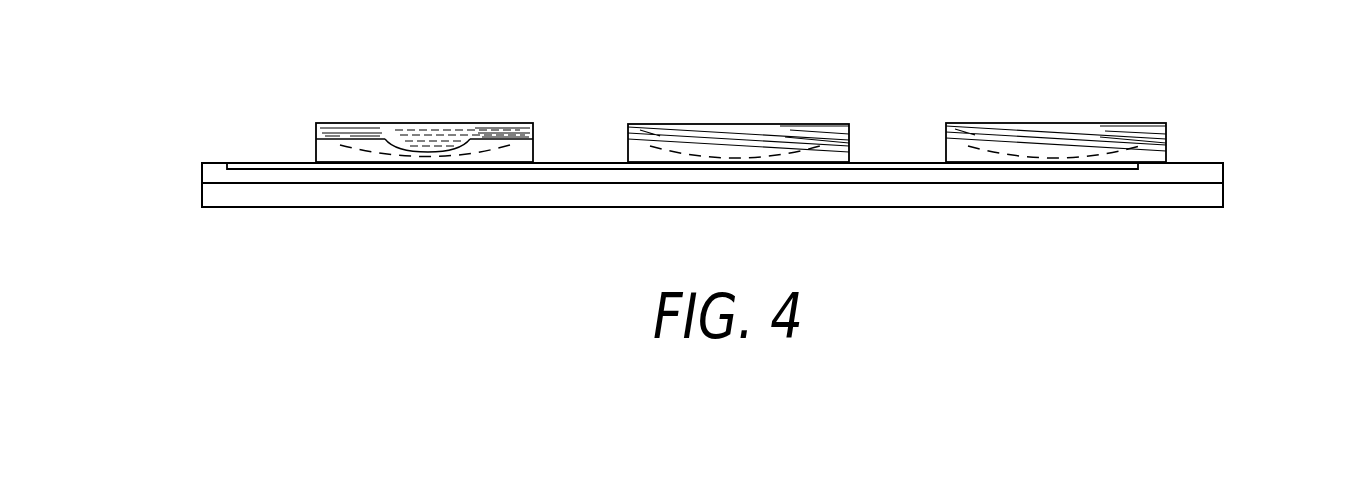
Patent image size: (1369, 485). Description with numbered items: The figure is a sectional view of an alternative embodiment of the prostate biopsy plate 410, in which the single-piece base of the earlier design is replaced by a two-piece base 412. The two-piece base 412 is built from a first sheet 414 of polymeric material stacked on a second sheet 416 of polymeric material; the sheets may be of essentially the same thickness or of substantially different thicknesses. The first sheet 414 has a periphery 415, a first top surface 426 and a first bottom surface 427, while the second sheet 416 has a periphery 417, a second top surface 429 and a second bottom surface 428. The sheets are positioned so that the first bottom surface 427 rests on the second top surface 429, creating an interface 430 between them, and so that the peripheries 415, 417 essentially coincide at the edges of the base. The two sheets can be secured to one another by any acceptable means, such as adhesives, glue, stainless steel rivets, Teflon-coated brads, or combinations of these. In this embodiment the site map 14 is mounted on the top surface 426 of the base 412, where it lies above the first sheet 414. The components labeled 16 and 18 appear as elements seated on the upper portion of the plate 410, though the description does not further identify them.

The prostate biopsy plate 410 is at (222, 96).
The two-piece base 412 is at (1255, 168).
The first sheet 414 is at (202, 168).
The second sheet 416 is at (202, 197).
The interface 430 is at (202, 183).
The first top surface 426 is at (213, 163).
The first bottom surface 427 is at (385, 183).
The second bottom surface 428 is at (248, 207).
The second top surface 429 is at (302, 183).
The periphery of first sheet 415 is at (1227, 163).
The periphery of second sheet 417 is at (1223, 193).
The site map 14 is at (895, 163).
The optical component 16 is at (516, 104).
The optical component 18 is at (1052, 116).